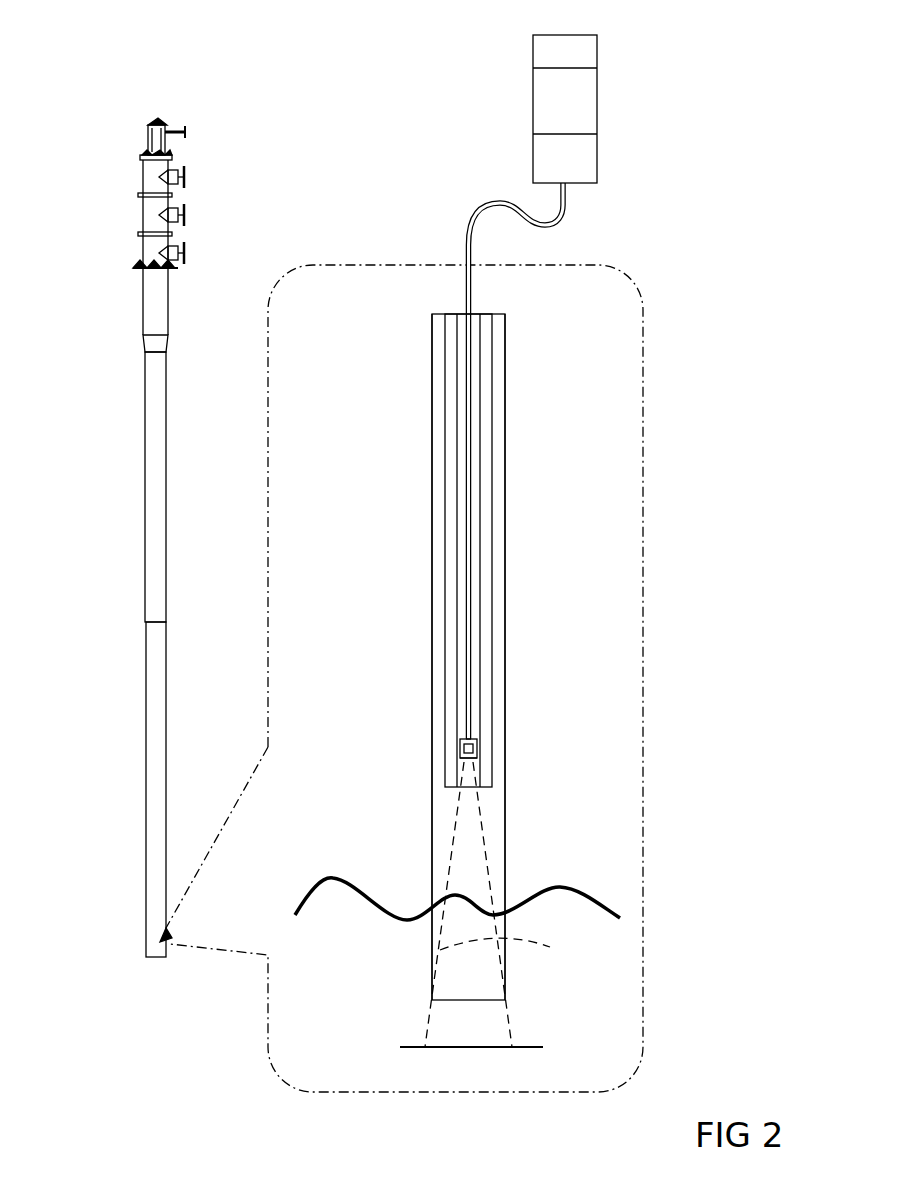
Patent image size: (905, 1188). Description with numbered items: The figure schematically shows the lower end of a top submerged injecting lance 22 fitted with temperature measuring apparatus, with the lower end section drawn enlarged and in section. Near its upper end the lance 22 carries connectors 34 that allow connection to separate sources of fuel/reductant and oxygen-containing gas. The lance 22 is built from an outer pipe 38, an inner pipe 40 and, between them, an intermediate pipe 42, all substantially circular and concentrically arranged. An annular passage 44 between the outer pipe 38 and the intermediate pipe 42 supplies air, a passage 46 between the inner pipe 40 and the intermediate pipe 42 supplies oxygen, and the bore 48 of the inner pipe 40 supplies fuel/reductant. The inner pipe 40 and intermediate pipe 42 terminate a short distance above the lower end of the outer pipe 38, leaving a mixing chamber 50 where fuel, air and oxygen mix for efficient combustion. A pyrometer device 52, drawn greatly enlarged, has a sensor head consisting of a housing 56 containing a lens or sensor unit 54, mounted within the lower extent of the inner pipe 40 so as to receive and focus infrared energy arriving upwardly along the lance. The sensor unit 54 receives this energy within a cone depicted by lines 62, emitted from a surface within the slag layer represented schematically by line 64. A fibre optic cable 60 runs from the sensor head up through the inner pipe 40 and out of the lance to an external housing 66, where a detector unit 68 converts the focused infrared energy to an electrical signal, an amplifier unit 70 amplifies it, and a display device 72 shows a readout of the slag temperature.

The top submerged injecting lance 22 is at (140, 515).
The connectors 34 is at (183, 248).
The outer pipe 38 is at (506, 838).
The inner pipe 40 is at (482, 608).
The intermediate pipe 42 is at (493, 655).
The annular passage 44 is at (500, 414).
The passage 46 is at (487, 457).
The bore 48 is at (477, 505).
The mixing chamber 50 is at (470, 855).
The pyrometer device 52 is at (457, 730).
The lens or sensor unit 54 is at (460, 748).
The housing 56 is at (477, 758).
The fibre optic cable 60 is at (470, 214).
The cone lines 62 is at (514, 953).
The slag surface line 64 is at (415, 1047).
The external housing 66 is at (597, 163).
The detector unit 68 is at (553, 163).
The amplifier unit 70 is at (578, 108).
The display device 72 is at (578, 50).